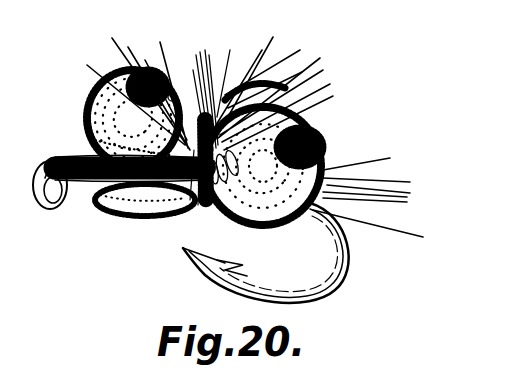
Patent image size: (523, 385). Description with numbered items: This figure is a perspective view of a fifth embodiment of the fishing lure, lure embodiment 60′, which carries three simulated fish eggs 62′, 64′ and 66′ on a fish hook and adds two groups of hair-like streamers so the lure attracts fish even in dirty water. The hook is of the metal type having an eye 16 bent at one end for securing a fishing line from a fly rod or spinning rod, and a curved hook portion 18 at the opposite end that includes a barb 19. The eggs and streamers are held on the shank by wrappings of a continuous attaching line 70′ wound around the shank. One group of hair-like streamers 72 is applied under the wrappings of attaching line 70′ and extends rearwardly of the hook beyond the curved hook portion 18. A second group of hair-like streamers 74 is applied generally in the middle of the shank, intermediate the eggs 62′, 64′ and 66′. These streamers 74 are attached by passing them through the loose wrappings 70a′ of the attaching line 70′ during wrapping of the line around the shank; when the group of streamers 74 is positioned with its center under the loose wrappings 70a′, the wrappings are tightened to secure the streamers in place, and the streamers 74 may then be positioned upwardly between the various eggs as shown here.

The lure embodiment 60′ is at (373, 68).
The simulated fish egg 62′ is at (90, 97).
The simulated fish egg 64′ is at (276, 7).
The simulated fish egg 66′ is at (270, 132).
The continuous attaching line 70′ is at (112, 214).
The loose wrappings 70a′ is at (203, 198).
The group of hair-like streamers 72 is at (375, 192).
The group of hair-like streamers 74 is at (290, 86).
The eye 16 is at (38, 210).
The curved hook portion 18 is at (330, 277).
The barb 19 is at (228, 265).